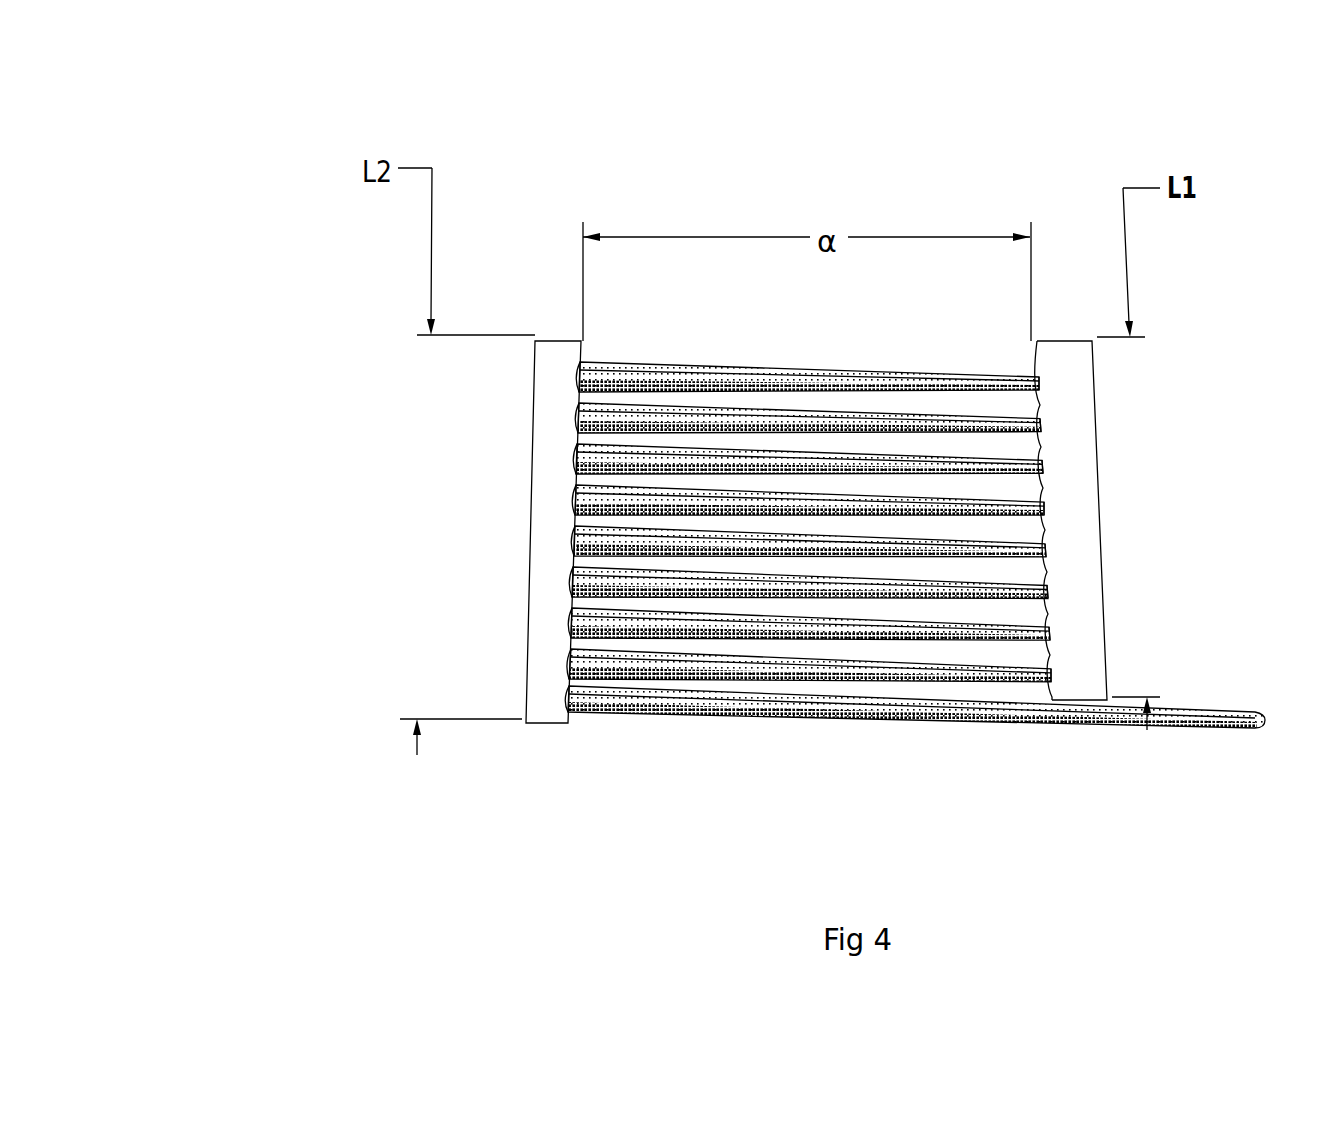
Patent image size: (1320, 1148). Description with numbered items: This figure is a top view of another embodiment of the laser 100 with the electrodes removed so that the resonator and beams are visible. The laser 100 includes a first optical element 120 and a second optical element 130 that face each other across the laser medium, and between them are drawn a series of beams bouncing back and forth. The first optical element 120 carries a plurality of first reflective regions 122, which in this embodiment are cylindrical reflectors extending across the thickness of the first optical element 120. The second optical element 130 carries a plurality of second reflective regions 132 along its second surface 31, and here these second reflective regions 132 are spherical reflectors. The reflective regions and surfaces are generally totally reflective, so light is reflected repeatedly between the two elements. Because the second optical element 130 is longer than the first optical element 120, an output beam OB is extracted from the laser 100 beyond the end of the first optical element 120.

The laser 100 is at (977, 190).
The first optical element 120 is at (1068, 348).
The first reflective regions 122 is at (1042, 378).
The second optical element 130 is at (536, 712).
The second reflective regions 132 is at (575, 363).
The second surface 31 is at (580, 358).
The output beam OB is at (1228, 725).